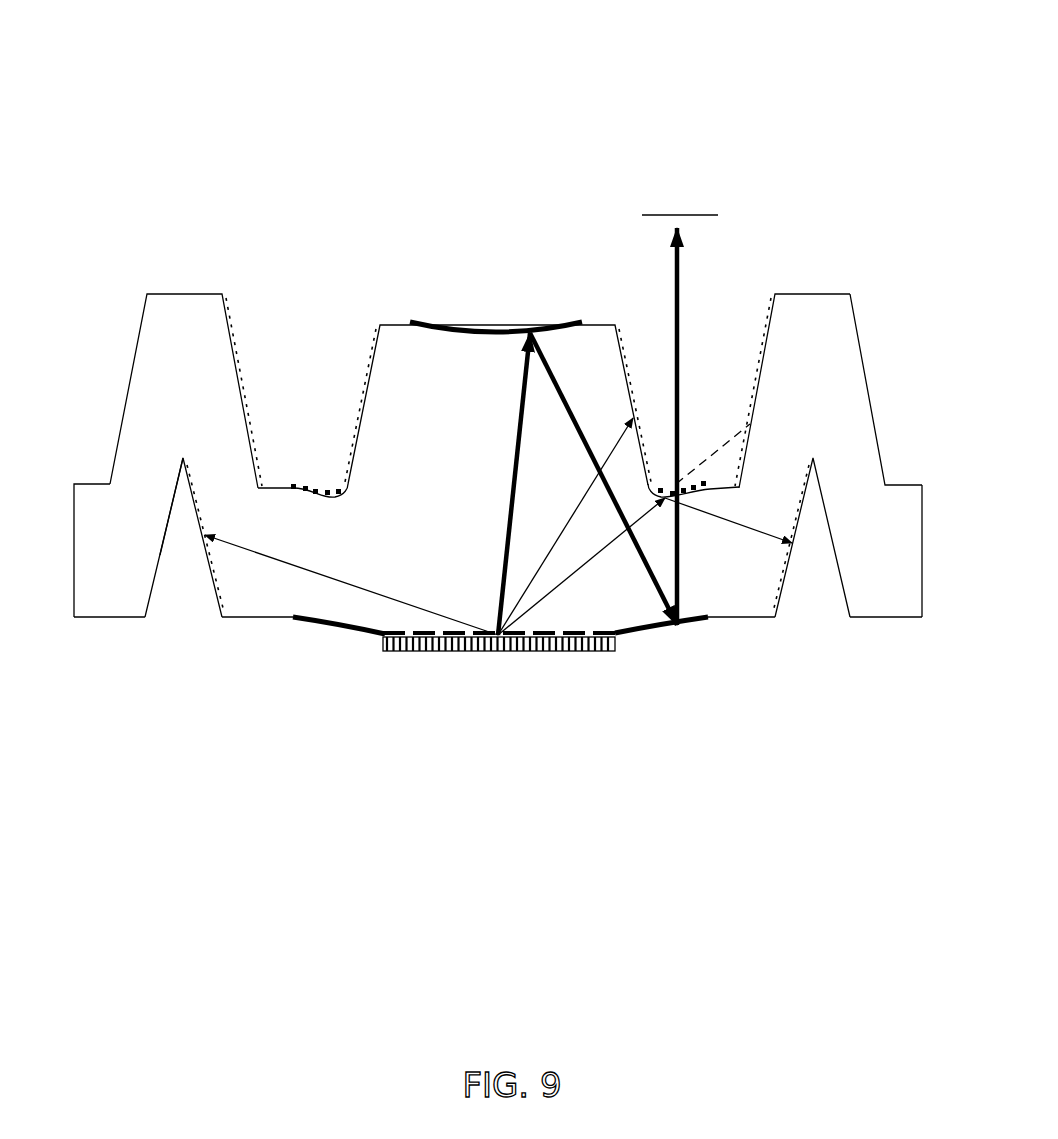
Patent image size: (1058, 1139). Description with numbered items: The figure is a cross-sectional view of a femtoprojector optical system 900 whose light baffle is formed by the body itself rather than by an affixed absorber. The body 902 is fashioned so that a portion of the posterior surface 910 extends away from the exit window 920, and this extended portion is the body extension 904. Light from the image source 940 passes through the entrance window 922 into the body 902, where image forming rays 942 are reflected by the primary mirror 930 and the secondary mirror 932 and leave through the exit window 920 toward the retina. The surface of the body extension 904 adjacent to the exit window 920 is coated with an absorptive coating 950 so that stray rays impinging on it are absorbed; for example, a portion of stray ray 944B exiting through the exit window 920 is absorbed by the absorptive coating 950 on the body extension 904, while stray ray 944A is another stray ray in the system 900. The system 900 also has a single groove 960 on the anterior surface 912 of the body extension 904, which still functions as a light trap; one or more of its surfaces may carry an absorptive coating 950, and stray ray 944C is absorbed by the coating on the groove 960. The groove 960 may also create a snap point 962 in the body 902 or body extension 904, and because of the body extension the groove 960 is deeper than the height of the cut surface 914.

The femtoprojector optical system 900 is at (315, 98).
The body 902 is at (498, 412).
The body extension 904 is at (833, 247).
The posterior surface 910 is at (862, 345).
The anterior surface 912 is at (868, 618).
The cut surface 914 is at (83, 552).
The exit window 920 is at (618, 665).
The entrance window 922 is at (432, 633).
The primary mirror 930 is at (363, 642).
The secondary mirror 932 is at (435, 323).
The image source 940 is at (455, 657).
The image forming rays 942 is at (548, 355).
The stray ray 944A is at (545, 578).
The stray ray 944B is at (708, 453).
The stray ray 944C is at (296, 568).
The absorptive coating 950 is at (358, 338).
The groove 960 is at (178, 552).
The snap point 962 is at (143, 480).